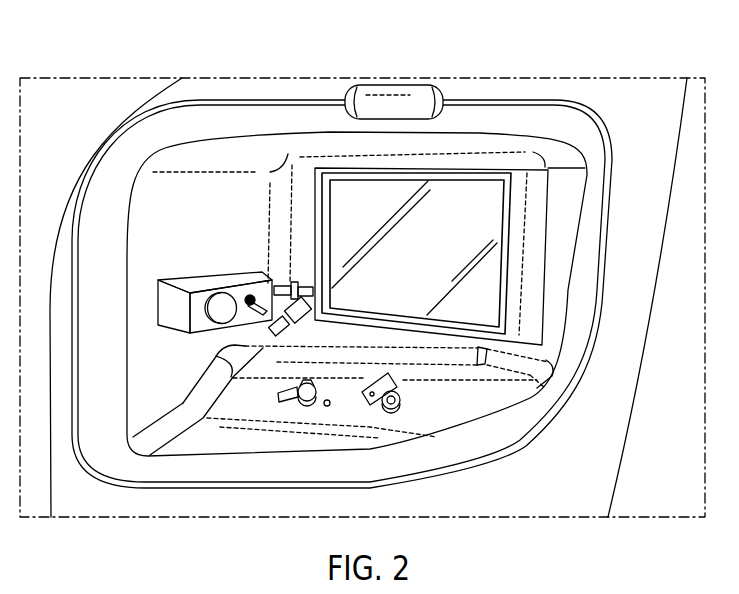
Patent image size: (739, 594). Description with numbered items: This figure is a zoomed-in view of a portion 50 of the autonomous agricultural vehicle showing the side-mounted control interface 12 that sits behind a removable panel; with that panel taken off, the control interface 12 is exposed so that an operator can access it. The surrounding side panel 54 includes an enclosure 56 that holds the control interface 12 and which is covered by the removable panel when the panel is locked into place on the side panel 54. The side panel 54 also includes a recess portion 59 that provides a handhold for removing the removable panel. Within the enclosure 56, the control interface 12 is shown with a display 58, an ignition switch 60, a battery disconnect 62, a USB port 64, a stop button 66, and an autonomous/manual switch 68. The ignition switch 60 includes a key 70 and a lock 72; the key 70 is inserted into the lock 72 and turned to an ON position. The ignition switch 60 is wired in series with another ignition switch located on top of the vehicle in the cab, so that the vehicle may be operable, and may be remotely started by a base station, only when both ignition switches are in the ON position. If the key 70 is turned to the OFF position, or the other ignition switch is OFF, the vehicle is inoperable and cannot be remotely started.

The side-mounted control interface 12 is at (303, 95).
The portion 50 is at (221, 68).
The side panel 54 is at (602, 97).
The enclosure 56 is at (143, 174).
The display 58 is at (472, 210).
The recess portion 59 is at (386, 84).
The ignition switch 60 is at (410, 403).
The battery disconnect 62 is at (312, 410).
The USB port 64 is at (262, 340).
The stop button 66 is at (206, 304).
The autonomous/manual switch 68 is at (241, 296).
The key 70 is at (376, 373).
The lock 72 is at (385, 412).